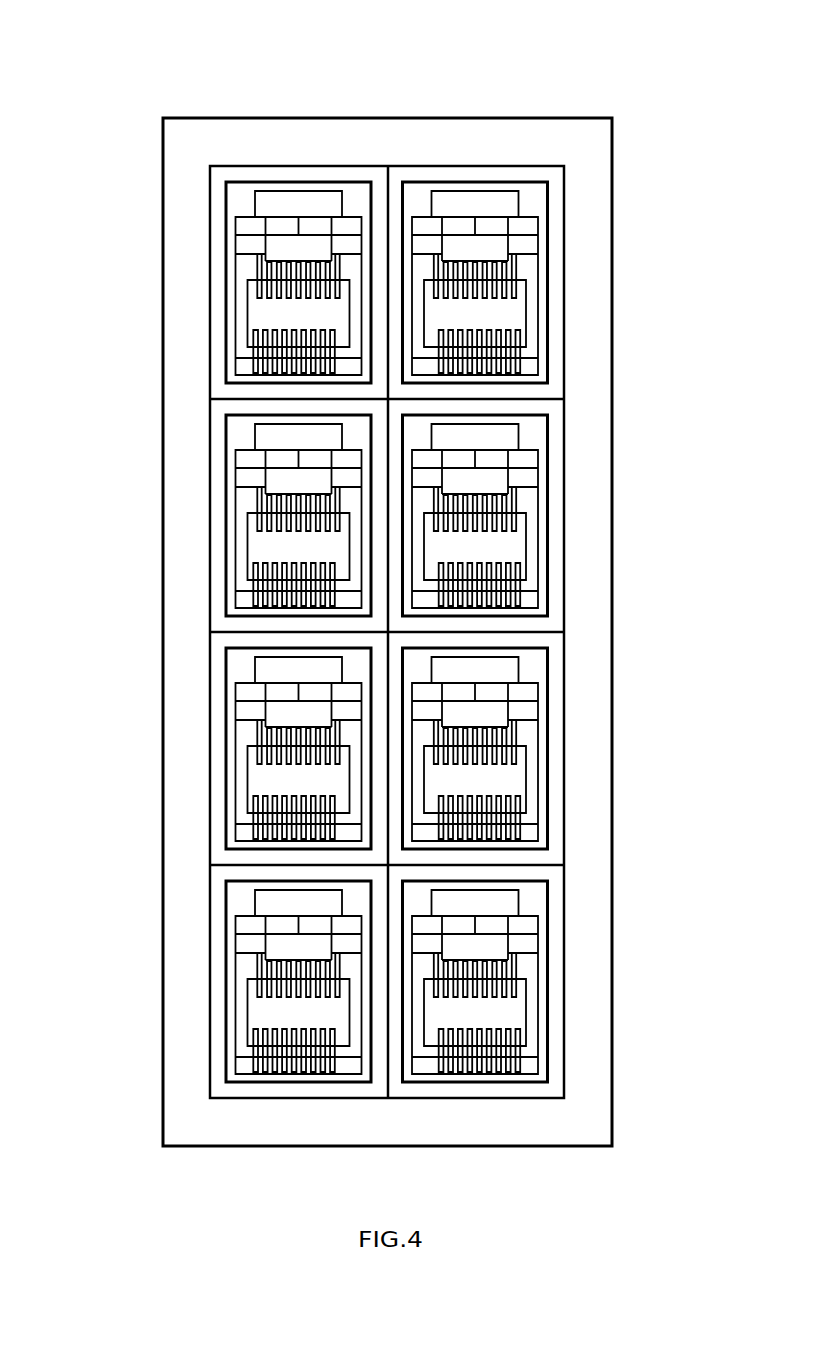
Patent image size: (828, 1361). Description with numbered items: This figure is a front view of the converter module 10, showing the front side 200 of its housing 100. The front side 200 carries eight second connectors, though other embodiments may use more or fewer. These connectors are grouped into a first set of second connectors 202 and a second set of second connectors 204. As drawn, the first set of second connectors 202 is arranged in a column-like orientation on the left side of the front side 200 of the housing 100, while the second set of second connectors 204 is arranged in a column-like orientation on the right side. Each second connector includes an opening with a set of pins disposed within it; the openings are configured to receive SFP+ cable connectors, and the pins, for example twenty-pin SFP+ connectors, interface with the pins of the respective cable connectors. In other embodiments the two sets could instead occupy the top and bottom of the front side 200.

The converter module 10 is at (90, 72).
The housing 100 is at (130, 165).
The front side 200 is at (266, 1147).
The first set of second connectors 202 is at (310, 117).
The second set of second connectors 204 is at (463, 117).